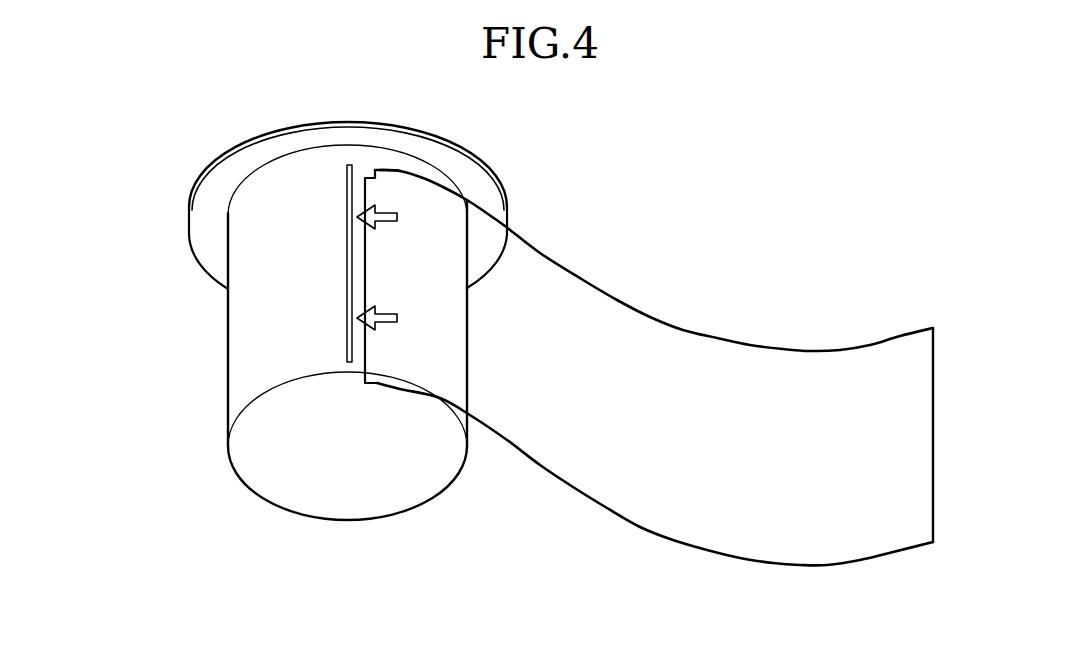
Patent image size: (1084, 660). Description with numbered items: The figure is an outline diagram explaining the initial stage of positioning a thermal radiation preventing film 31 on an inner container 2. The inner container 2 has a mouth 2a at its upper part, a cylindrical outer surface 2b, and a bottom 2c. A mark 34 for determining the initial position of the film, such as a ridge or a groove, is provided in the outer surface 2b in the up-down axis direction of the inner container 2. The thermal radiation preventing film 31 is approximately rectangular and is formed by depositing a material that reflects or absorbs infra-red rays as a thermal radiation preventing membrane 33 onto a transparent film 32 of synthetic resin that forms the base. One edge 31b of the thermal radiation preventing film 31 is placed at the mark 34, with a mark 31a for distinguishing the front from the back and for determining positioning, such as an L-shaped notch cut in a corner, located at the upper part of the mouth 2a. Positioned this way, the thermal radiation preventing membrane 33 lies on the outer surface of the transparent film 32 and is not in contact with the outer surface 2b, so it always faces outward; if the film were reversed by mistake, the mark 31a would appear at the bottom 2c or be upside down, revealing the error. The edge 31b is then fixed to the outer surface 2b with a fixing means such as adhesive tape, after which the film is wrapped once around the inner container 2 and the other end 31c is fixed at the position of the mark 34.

The inner container 2 is at (128, 434).
The mouth 2a is at (198, 250).
The outer surface 2b is at (233, 390).
The bottom 2c is at (303, 492).
The thermal radiation preventing film 31 is at (772, 294).
The mark for distinguishing the front from the back and for determining positioning 31a is at (352, 163).
The one edge of the thermal radiation preventing film 31b is at (363, 268).
The other end of the thermal radiation preventing film 31c is at (933, 388).
The transparent film 32 is at (590, 283).
The thermal radiation preventing membrane 33 is at (797, 548).
The mark for determining the initial position of the film 34 is at (347, 340).